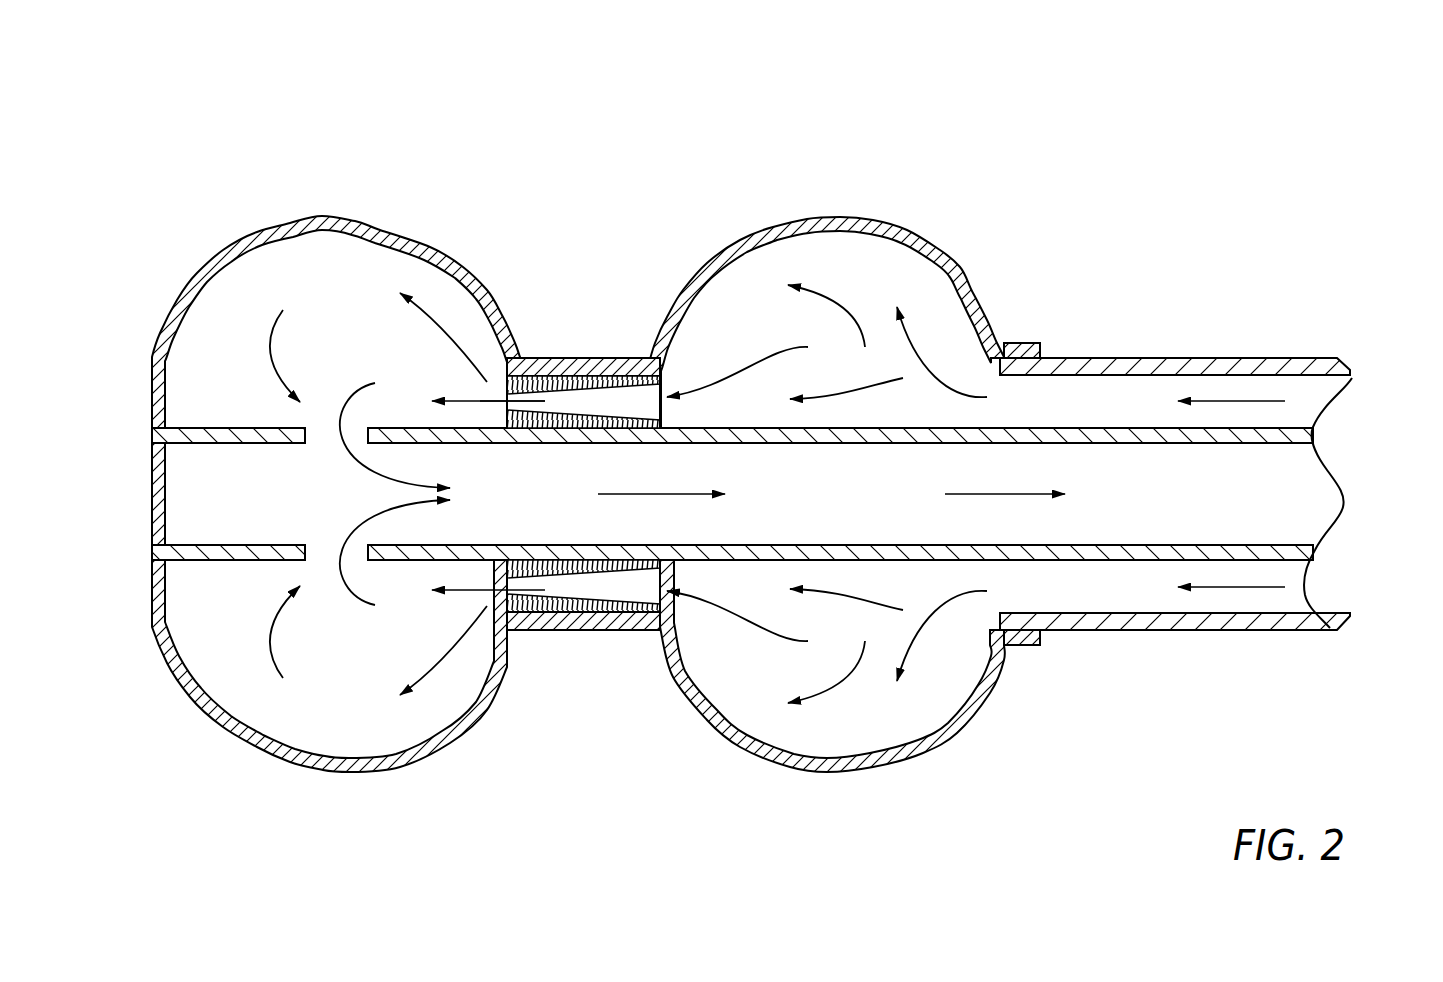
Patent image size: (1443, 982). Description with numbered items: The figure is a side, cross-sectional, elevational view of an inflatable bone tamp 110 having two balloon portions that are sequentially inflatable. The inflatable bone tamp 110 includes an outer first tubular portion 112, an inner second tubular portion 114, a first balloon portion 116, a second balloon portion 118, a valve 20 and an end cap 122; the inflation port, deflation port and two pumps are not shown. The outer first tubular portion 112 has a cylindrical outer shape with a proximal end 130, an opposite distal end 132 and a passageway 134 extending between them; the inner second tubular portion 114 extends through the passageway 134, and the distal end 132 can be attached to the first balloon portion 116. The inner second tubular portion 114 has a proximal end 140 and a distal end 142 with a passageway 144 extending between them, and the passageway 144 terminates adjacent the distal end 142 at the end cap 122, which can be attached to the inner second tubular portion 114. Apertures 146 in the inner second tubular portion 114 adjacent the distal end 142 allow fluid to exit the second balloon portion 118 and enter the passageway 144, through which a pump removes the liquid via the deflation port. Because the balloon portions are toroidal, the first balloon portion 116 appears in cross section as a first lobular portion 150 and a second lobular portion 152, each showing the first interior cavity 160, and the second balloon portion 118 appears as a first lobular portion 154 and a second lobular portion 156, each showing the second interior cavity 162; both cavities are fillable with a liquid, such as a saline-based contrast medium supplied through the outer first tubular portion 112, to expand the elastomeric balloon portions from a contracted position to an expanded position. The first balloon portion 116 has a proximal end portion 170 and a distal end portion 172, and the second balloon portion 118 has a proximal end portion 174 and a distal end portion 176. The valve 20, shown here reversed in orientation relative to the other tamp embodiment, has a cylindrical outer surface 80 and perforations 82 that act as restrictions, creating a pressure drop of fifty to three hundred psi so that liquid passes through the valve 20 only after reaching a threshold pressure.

The inflatable bone tamp 110 is at (198, 142).
The outer first tubular portion 112 is at (1215, 474).
The inner second tubular portion 114 is at (1115, 562).
The first balloon portion 116 is at (948, 262).
The second balloon portion 118 is at (297, 480).
The end cap 122 is at (160, 495).
The proximal end 130 is at (1307, 357).
The distal end 132 is at (1022, 355).
The passageway 134 is at (1315, 385).
The proximal end 140 is at (737, 469).
The distal end 142 is at (160, 432).
The passageway 144 is at (1285, 488).
The apertures 146 is at (315, 436).
The first lobular portion 150 is at (826, 471).
The second lobular portion 152 is at (890, 768).
The first lobular portion 154 is at (432, 237).
The second lobular portion 156 is at (348, 772).
The first interior cavity 160 is at (760, 272).
The second interior cavity 162 is at (255, 297).
The proximal end portion 170 is at (1033, 347).
The distal end portion 172 is at (622, 357).
The proximal end portion 174 is at (540, 357).
The distal end portion 176 is at (160, 560).
The valve 20 is at (598, 629).
The cylindrical outer surface 80 is at (570, 500).
The perforations 82 is at (578, 394).